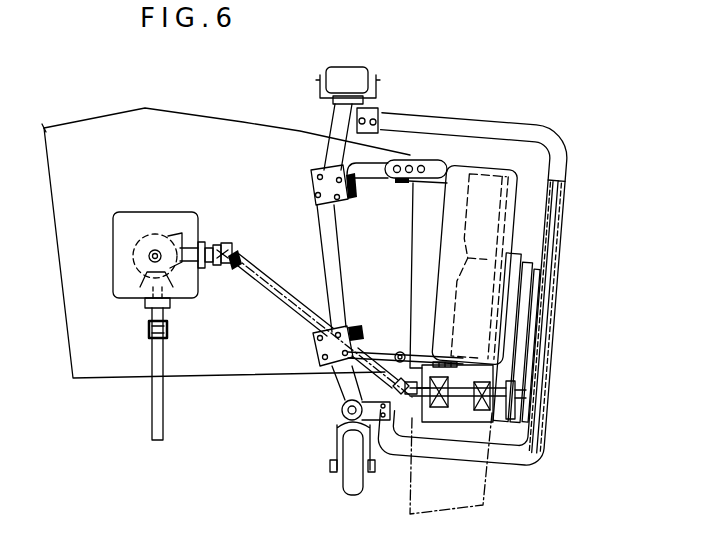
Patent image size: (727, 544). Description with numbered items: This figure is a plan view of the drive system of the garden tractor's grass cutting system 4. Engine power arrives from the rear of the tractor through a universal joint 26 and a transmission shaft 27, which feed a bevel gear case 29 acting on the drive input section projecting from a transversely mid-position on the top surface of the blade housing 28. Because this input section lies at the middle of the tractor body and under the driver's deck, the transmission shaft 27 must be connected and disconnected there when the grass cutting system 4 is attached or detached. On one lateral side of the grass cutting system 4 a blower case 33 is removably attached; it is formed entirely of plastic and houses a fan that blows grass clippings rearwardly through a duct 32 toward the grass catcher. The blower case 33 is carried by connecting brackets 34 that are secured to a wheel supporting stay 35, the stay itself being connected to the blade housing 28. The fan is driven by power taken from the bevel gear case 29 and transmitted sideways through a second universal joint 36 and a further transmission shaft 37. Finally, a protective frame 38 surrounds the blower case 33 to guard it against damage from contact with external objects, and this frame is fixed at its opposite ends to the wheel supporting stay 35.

The grass cutting system 4 is at (245, 118).
The universal joint 26 is at (173, 322).
The transmission shaft 27 is at (165, 426).
The blade housing 28 is at (290, 366).
The bevel gear case 29 is at (141, 211).
The duct 32 is at (492, 496).
The blower case 33 is at (512, 222).
The connecting brackets 34 is at (375, 177).
The wheel supporting stay 35 is at (336, 264).
The universal joint 36 is at (228, 232).
The transmission shaft 37 is at (277, 278).
The protective frame 38 is at (552, 305).